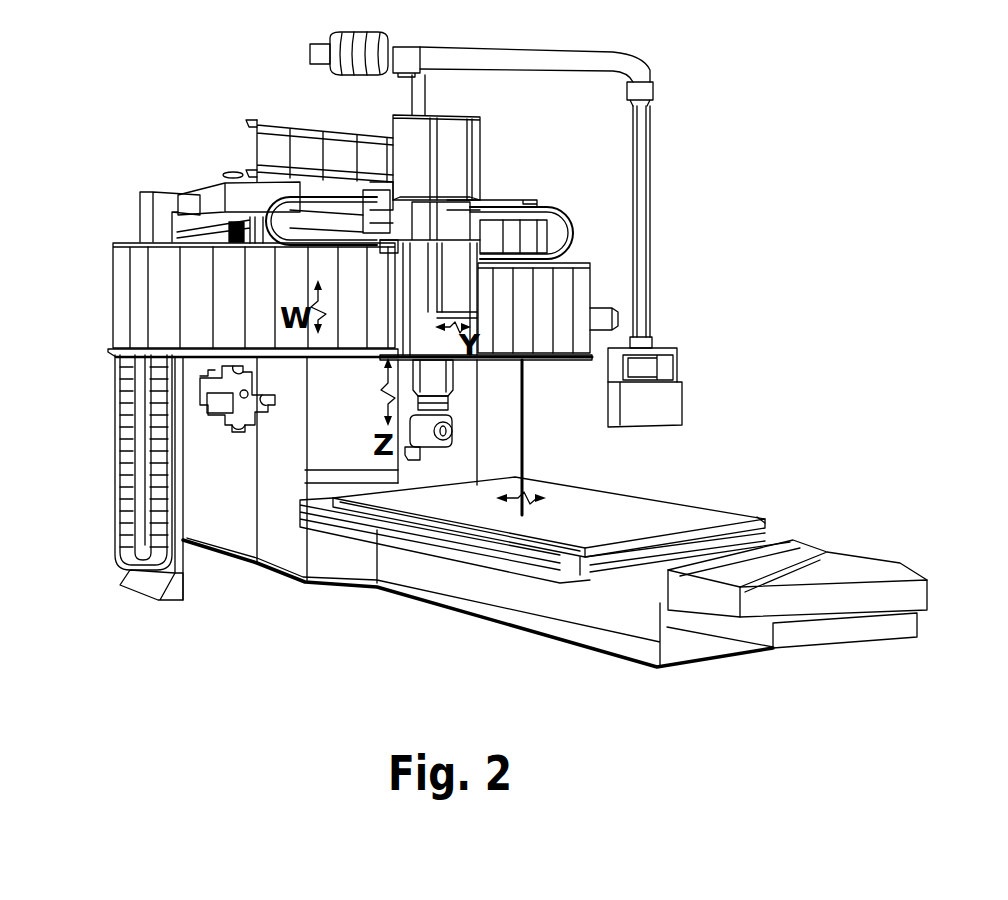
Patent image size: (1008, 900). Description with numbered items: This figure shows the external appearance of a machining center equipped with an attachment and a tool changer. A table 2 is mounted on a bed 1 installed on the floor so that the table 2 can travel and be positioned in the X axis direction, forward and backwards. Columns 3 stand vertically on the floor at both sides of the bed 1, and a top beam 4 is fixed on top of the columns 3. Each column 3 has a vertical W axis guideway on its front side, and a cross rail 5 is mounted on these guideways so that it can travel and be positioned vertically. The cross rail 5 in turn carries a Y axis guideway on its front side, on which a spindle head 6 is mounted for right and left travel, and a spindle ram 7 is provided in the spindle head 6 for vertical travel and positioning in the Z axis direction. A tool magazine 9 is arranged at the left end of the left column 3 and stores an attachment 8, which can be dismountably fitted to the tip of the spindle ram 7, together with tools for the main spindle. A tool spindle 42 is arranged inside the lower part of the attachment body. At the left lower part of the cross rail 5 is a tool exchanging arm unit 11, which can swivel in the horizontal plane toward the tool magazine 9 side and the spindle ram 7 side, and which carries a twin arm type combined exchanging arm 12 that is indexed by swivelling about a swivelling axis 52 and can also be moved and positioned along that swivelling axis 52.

The bed 1 is at (533, 607).
The table 2 is at (643, 510).
The columns 3 is at (300, 412).
The top beam 4 is at (213, 193).
The cross rail 5 is at (585, 283).
The spindle head 6 is at (463, 268).
The spindle ram 7 is at (447, 372).
The attachment 8 is at (430, 447).
The tool magazine 9 is at (115, 502).
The tool exchanging arm unit 11 is at (212, 382).
The combined exchanging arm 12 is at (240, 428).
The tool spindle 42 is at (452, 412).
The swivelling axis 52 is at (255, 413).